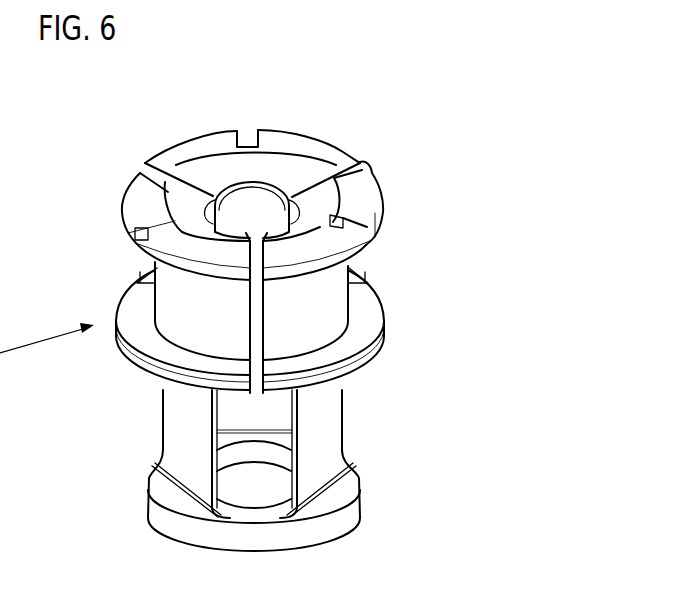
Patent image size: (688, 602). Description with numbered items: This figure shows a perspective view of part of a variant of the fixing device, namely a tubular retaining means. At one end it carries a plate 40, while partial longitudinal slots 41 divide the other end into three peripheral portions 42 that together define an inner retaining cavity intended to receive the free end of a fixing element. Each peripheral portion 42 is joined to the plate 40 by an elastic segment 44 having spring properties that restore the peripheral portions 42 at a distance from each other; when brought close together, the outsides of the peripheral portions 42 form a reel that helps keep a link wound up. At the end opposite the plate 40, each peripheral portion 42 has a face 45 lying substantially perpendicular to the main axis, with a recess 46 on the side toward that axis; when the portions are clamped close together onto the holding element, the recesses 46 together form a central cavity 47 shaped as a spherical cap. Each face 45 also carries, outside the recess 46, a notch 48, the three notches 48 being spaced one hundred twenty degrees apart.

The plate 40 is at (178, 522).
The partial longitudinal slots 41 is at (382, 168).
The peripheral portions 42 is at (183, 312).
The elastic segment 44 is at (193, 458).
The face 45 is at (300, 142).
The recess 46 is at (293, 177).
The central cavity 47 is at (271, 150).
The notch 48 is at (247, 143).